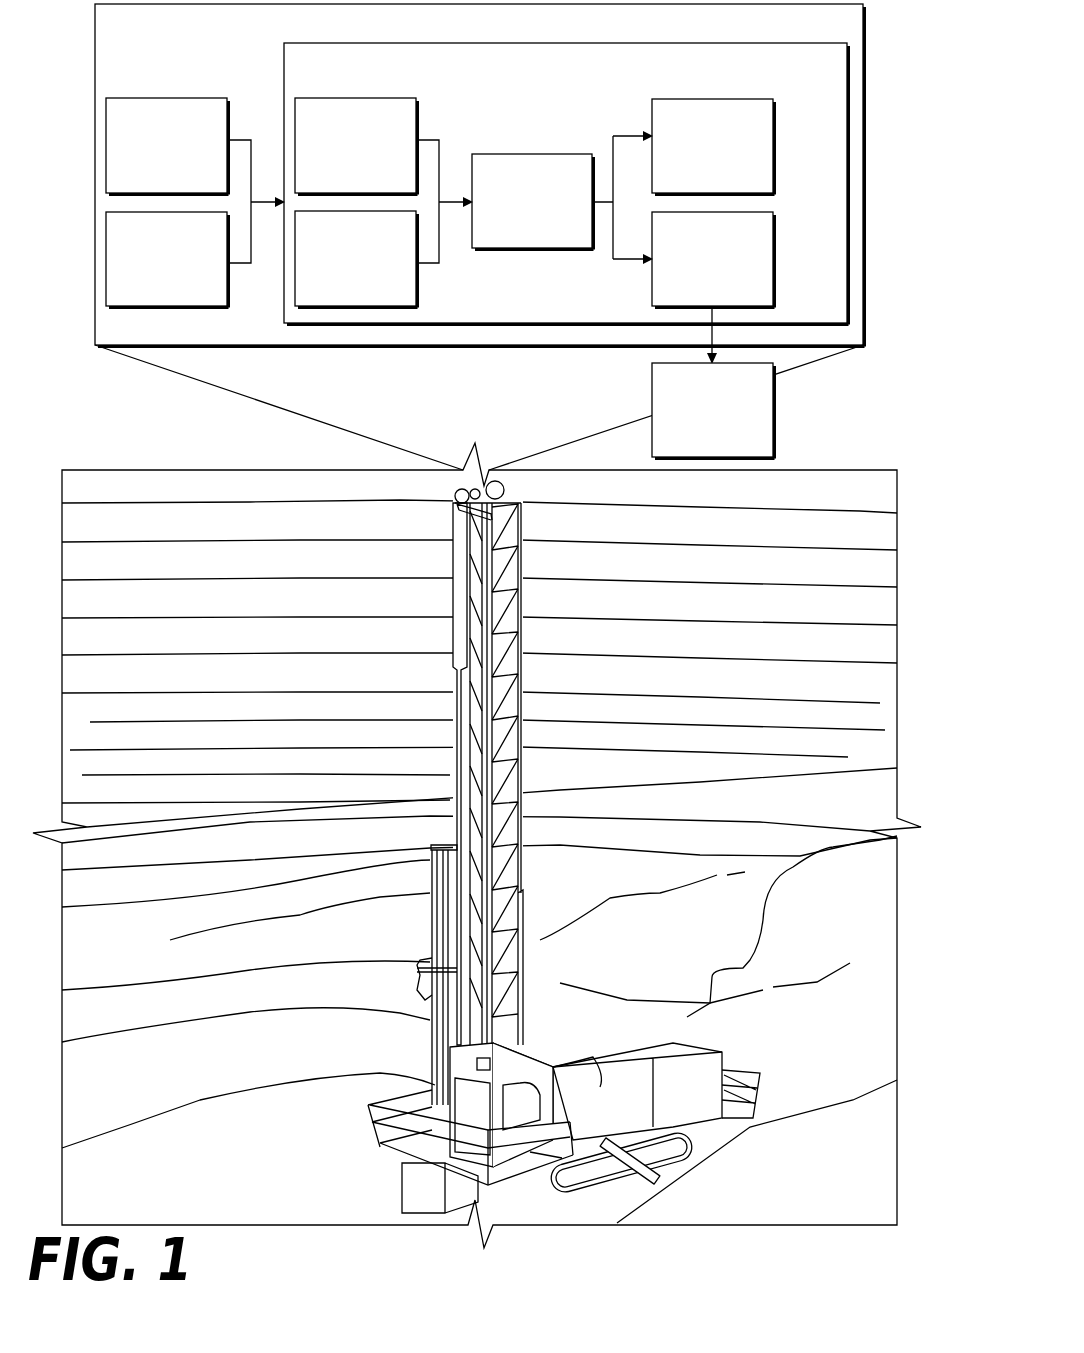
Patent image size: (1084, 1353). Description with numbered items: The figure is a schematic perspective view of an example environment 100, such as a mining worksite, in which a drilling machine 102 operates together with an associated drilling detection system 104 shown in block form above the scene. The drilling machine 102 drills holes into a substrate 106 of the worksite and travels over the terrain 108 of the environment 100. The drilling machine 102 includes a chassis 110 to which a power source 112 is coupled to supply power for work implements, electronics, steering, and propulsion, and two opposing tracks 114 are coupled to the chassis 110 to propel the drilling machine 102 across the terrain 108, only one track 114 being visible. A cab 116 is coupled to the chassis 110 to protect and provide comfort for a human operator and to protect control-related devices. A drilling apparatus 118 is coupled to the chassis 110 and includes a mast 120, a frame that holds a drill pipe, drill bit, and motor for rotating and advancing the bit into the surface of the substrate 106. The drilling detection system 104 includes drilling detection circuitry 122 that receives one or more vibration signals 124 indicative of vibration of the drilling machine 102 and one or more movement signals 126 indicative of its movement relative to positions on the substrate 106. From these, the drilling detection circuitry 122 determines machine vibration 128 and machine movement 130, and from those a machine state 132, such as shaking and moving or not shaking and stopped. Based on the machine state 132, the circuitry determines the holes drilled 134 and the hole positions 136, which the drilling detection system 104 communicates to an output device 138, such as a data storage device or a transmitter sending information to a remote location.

The environment 100 is at (556, 430).
The drilling machine 102 is at (593, 1062).
The drilling detection system 104 is at (615, 37).
The substrate 106 is at (795, 1070).
The terrain 108 is at (795, 682).
The chassis 110 is at (580, 1170).
The power source 112 is at (697, 1108).
The tracks 114 is at (673, 1168).
The cab 116 is at (453, 1053).
The drilling apparatus 118 is at (520, 612).
The mast 120 is at (495, 700).
The drilling detection circuitry 122 is at (665, 83).
The vibration signals 124 is at (153, 183).
The movement signals 126 is at (153, 292).
The machine vibration 128 is at (342, 183).
The machine movement 130 is at (342, 292).
The machine state 132 is at (519, 233).
The holes drilled 134 is at (699, 183).
The hole positions 136 is at (699, 292).
The output device 138 is at (699, 442).